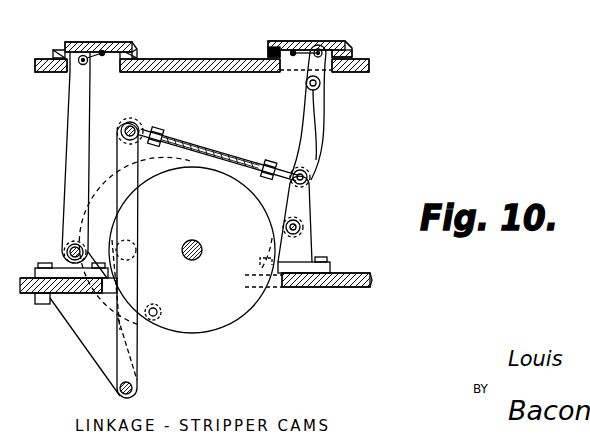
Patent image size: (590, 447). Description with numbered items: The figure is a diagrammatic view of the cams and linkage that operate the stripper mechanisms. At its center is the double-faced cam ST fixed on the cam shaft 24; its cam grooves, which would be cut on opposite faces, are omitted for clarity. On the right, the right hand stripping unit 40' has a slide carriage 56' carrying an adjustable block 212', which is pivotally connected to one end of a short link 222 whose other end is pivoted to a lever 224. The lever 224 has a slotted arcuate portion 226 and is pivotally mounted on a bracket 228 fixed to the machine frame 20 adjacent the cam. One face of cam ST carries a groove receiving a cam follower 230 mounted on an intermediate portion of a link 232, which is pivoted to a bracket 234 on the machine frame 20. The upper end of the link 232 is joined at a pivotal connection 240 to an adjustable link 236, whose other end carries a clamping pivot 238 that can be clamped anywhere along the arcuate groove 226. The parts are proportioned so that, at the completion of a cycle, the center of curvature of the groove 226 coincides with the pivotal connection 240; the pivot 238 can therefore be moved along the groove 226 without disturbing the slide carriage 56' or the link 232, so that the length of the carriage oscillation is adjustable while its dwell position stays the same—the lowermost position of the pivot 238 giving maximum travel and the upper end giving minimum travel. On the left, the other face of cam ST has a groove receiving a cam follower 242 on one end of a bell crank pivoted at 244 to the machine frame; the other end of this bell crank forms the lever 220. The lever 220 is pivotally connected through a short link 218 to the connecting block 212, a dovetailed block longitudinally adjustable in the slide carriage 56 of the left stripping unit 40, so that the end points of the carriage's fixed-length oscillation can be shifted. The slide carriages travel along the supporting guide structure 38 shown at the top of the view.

The stripping unit 40 is at (66, 18).
The slide carriage 56 is at (95, 37).
The connecting block 212 is at (139, 39).
The top bar 38 is at (168, 60).
The short link 218 is at (93, 63).
The lever 220 is at (72, 132).
The pivotal connection 240 is at (125, 125).
The adjustable link 236 is at (202, 150).
The right hand stripping unit 40' is at (249, 25).
The slide carriage 56' is at (310, 37).
The adjustable block 212' is at (375, 45).
The short link 222 is at (300, 57).
The lever 224 is at (330, 103).
The slotted arcuate portion 226 is at (316, 123).
The clamping pivot 238 is at (310, 176).
The bracket 228 is at (307, 240).
The machine frame 20 is at (352, 272).
The cam shaft 24 is at (193, 247).
The cam follower 230 is at (137, 228).
The pivot 244 is at (68, 251).
The cam follower 242 is at (160, 307).
The bracket 234 is at (73, 321).
The link 232 is at (137, 345).
The cam ST is at (250, 307).